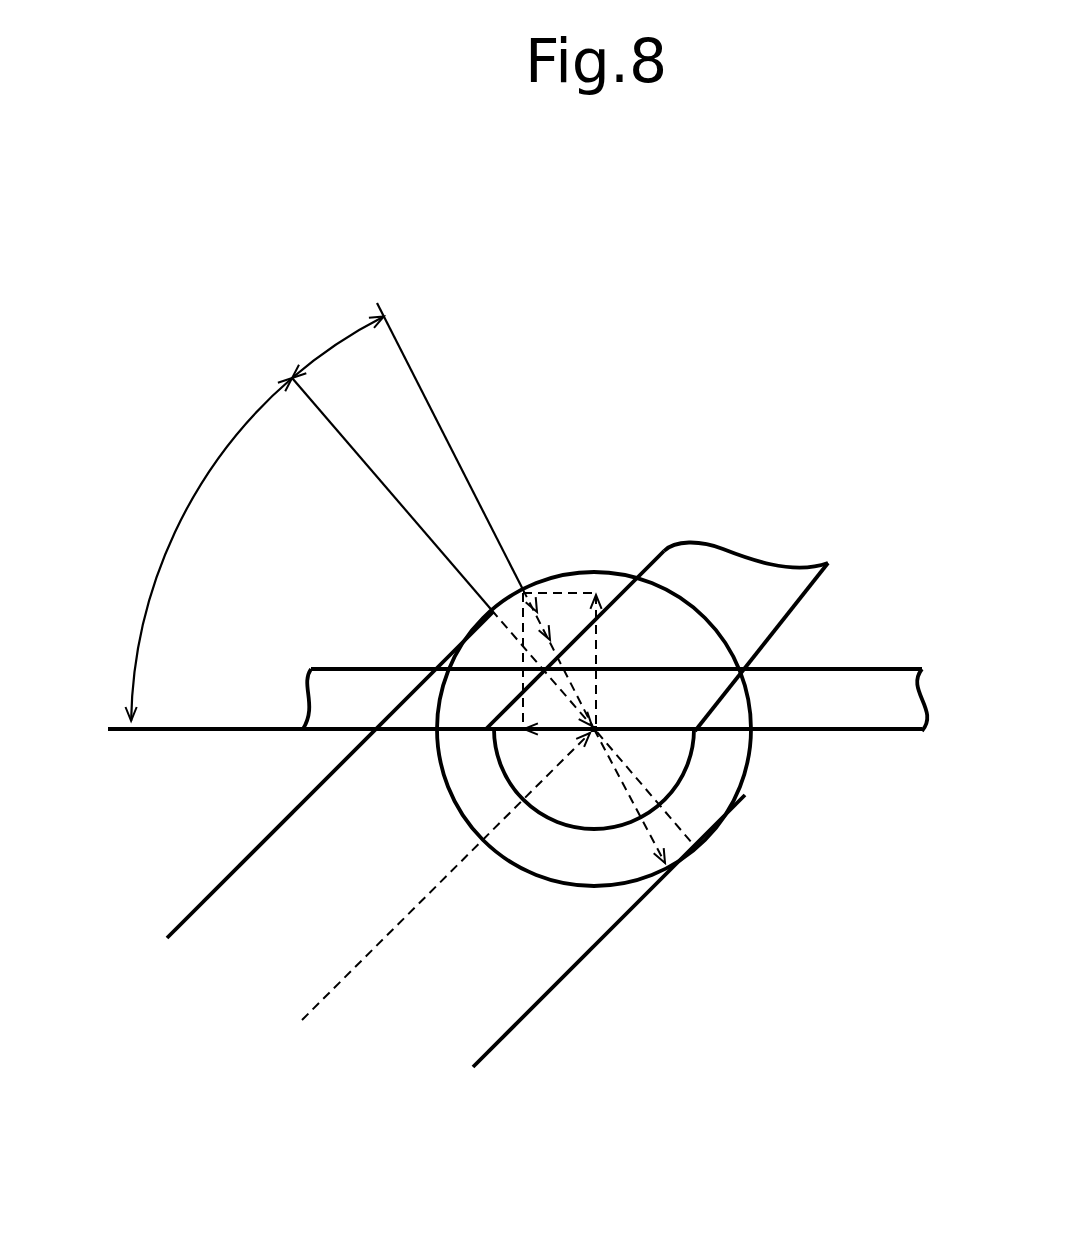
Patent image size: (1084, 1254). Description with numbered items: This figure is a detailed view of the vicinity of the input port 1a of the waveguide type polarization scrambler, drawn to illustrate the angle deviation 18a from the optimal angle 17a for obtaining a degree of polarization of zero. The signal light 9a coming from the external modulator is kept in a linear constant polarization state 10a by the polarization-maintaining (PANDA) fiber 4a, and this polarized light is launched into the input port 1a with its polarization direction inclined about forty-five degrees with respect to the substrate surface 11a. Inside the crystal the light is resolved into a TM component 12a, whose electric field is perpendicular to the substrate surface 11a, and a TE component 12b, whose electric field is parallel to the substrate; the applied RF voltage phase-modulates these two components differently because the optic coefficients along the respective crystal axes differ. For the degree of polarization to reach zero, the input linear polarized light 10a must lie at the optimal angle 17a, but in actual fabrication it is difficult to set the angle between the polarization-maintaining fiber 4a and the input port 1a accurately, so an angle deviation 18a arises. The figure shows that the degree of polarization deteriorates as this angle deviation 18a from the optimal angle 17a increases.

The input port 1a is at (680, 773).
The polarization-maintaining fiber 4a is at (260, 845).
The signal light 9a is at (378, 945).
The linear constant polarization state 10a is at (565, 592).
The substrate surface 11a is at (893, 731).
The TM component 12a is at (603, 657).
The TE component 12b is at (547, 732).
The optimal angle θ1 17a is at (188, 503).
The angle deviation |Δθ1| 18a is at (332, 343).